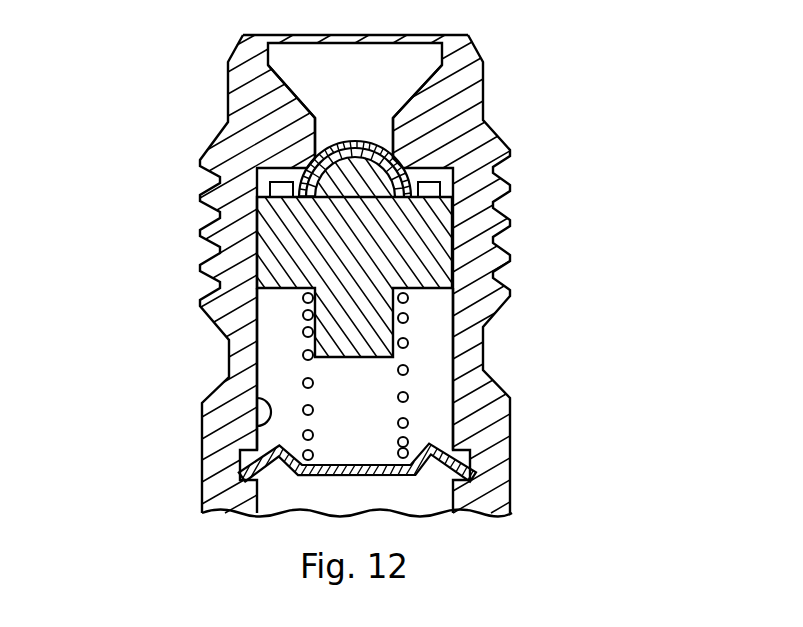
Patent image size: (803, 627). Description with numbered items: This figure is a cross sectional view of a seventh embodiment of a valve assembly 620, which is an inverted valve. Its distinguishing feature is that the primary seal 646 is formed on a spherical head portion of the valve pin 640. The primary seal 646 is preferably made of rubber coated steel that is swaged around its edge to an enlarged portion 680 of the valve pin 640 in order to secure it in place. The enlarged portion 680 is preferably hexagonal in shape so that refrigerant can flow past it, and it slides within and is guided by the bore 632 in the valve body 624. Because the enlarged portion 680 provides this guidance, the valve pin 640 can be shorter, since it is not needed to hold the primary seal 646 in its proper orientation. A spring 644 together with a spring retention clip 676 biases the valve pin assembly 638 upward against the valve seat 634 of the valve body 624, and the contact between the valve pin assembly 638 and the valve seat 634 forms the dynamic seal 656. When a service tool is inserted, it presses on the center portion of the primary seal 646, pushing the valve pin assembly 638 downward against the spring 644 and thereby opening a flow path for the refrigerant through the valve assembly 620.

The valve assembly 620 is at (547, 138).
The valve body 624 is at (503, 318).
The bore 632 is at (262, 428).
The valve seat 634 is at (488, 149).
The valve pin assembly 638 is at (283, 299).
The valve pin 640 is at (503, 250).
The spring 644 is at (410, 395).
The primary seal 646 is at (480, 62).
The dynamic seal 656 is at (315, 135).
The spring retention clip 676 is at (453, 460).
The enlarged portion 680 is at (221, 161).